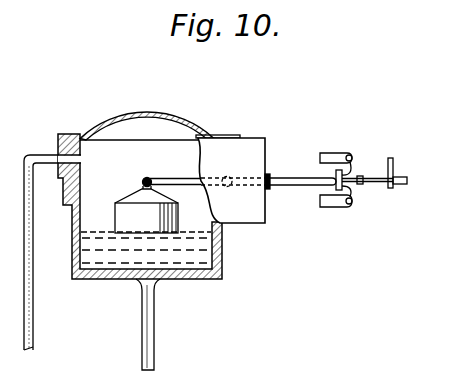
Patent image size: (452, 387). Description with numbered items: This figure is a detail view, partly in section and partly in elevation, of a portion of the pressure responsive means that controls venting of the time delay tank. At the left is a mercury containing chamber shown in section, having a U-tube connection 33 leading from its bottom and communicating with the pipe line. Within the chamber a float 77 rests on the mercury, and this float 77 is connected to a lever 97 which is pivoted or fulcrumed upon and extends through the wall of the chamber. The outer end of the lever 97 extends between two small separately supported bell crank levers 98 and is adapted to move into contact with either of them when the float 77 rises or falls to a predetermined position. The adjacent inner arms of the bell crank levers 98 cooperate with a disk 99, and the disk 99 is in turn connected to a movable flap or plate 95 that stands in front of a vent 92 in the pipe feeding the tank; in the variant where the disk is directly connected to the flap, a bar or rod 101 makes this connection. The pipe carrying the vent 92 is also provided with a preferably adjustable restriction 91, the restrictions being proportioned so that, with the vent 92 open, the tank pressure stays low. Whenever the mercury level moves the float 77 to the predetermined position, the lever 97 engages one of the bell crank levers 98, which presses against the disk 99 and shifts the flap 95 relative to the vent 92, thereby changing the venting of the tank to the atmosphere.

The U-tube connection 33 is at (154, 345).
The float 77 is at (129, 213).
The lever 97 is at (181, 164).
The restriction 91 is at (294, 186).
The disk 99 is at (336, 172).
The bell crank levers 98 is at (331, 152).
The bar or rod 101 is at (367, 184).
The flap or plate 95 is at (388, 165).
The vent 92 is at (402, 185).